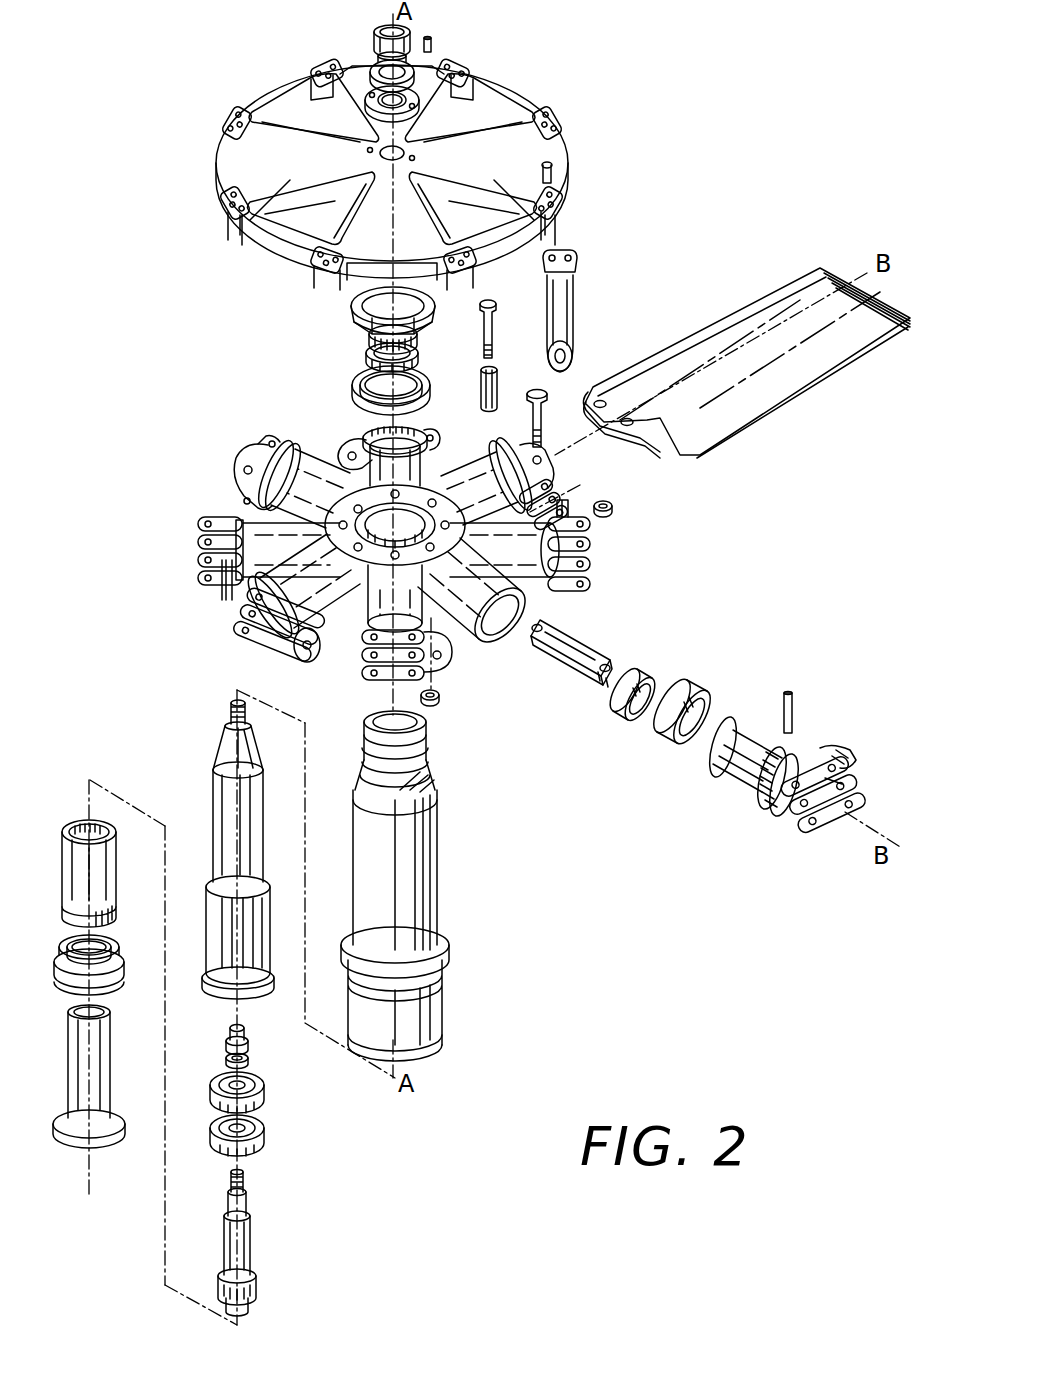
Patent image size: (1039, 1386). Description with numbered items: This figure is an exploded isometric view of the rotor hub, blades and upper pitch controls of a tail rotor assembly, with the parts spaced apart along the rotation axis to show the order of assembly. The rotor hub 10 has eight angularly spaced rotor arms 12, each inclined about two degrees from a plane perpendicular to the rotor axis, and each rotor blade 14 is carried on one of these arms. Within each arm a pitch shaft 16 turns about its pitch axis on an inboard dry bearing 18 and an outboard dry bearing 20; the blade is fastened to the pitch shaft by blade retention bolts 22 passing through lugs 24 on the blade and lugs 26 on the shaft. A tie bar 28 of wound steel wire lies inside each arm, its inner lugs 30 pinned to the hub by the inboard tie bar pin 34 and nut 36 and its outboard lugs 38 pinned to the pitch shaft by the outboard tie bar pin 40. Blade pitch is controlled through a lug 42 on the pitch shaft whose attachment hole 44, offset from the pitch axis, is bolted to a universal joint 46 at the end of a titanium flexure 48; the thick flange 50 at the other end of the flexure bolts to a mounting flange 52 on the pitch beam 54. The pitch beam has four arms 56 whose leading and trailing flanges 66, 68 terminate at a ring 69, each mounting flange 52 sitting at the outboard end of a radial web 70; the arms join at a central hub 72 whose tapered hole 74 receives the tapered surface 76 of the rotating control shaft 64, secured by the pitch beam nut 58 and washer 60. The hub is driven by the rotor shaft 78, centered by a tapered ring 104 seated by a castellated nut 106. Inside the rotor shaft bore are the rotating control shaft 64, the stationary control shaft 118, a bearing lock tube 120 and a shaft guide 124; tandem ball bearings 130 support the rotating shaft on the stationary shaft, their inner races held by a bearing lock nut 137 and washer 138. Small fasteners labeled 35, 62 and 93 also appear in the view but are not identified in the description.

The rotor hub 10 is at (212, 617).
The rotor arm 12 is at (468, 620).
The rotor blade 14 is at (812, 270).
The pitch shaft 16 is at (762, 790).
The inboard dry bearing 18 is at (624, 716).
The outboard dry bearing 20 is at (690, 690).
The blade retention bolts 22 is at (545, 392).
The lugs 24 is at (638, 466).
The lugs 26 is at (810, 810).
The tie bar 28 is at (570, 658).
The inner lugs 30 is at (540, 620).
The inboard tie bar pin 34 is at (480, 385).
The screw 35 is at (484, 320).
The nut 36 is at (440, 698).
The outboard lugs 38 is at (608, 652).
The outboard tie bar pin 40 is at (795, 708).
The lug 42 is at (840, 755).
The attachment hole 44 is at (845, 775).
The universal joint 46 is at (568, 350).
The flexure 48 is at (560, 300).
The flange 50 is at (565, 262).
The mounting flange 52 is at (545, 214).
The pitch beam 54 is at (560, 92).
The pitch beam arms 56 is at (296, 159).
The pitch beam nut 58 is at (428, 30).
The washer 60 is at (418, 100).
The threaded stud 62 is at (228, 712).
The rotating control shaft 64 is at (212, 820).
The flange 66 is at (440, 115).
The flange 68 is at (345, 116).
The ring 69 is at (280, 250).
The web 70 is at (358, 75).
The central hub 72 is at (378, 158).
The tapered hole 74 is at (335, 208).
The tapered surface 76 is at (222, 748).
The rotor shaft 78 is at (440, 870).
The mounting lug 93 is at (276, 107).
The tapered ring 104 is at (356, 385).
The castellated nut 106 is at (360, 332).
The stationary control shaft 118 is at (252, 1250).
The bearing lock tube 120 is at (60, 850).
The shaft guide 124 is at (68, 1080).
The tandem ball bearings 130 is at (268, 1138).
The bearing lock nut 137 is at (255, 1040).
The washer 138 is at (228, 1056).